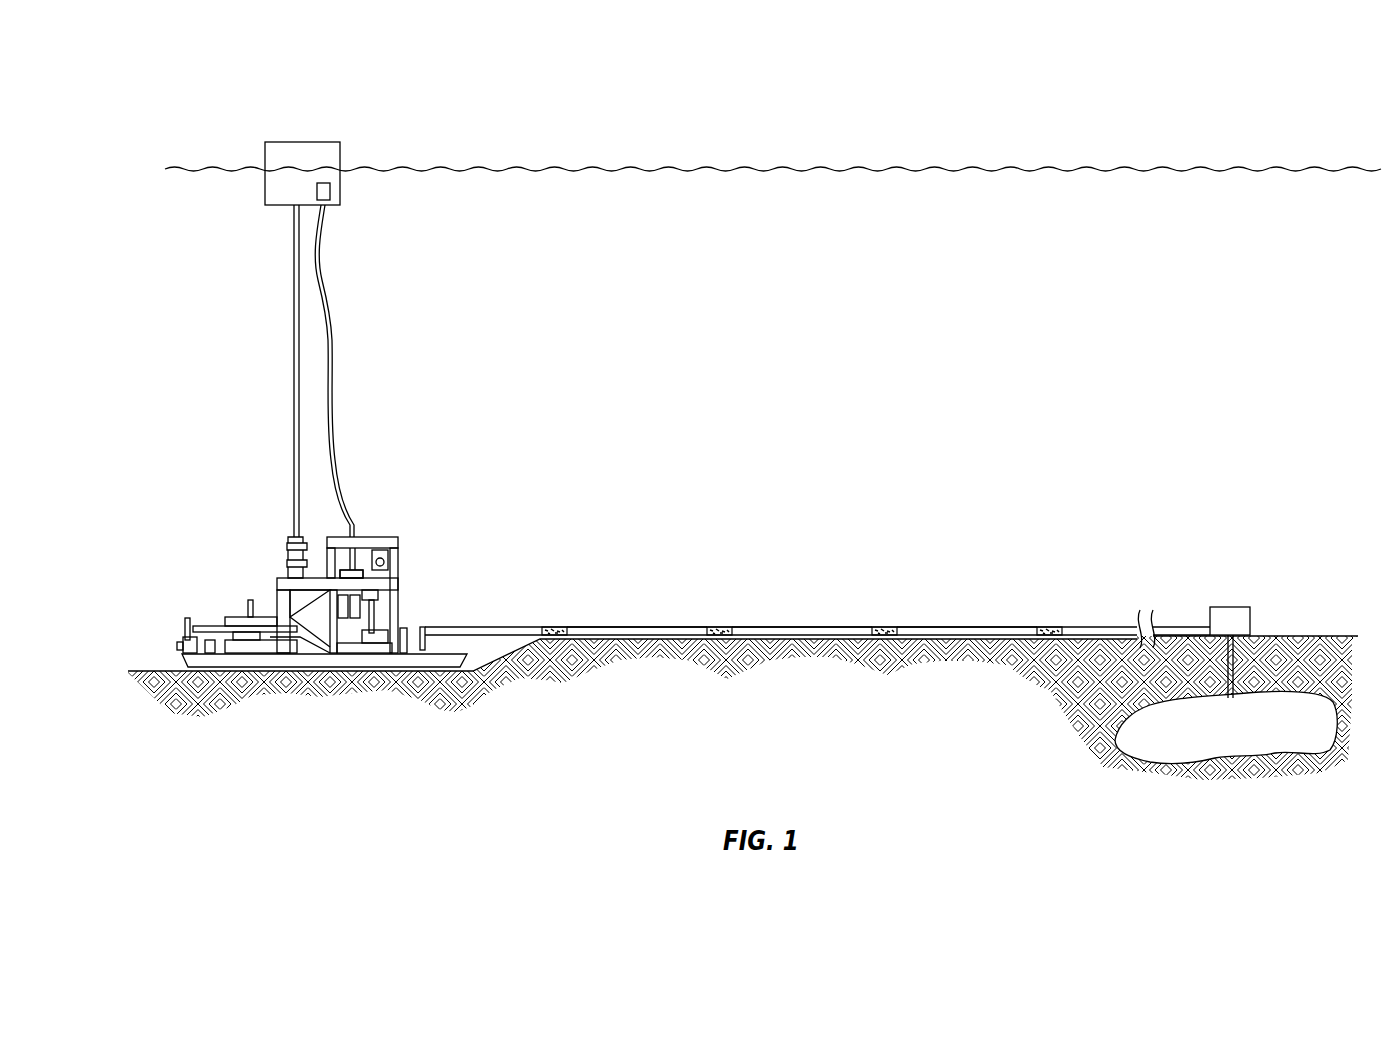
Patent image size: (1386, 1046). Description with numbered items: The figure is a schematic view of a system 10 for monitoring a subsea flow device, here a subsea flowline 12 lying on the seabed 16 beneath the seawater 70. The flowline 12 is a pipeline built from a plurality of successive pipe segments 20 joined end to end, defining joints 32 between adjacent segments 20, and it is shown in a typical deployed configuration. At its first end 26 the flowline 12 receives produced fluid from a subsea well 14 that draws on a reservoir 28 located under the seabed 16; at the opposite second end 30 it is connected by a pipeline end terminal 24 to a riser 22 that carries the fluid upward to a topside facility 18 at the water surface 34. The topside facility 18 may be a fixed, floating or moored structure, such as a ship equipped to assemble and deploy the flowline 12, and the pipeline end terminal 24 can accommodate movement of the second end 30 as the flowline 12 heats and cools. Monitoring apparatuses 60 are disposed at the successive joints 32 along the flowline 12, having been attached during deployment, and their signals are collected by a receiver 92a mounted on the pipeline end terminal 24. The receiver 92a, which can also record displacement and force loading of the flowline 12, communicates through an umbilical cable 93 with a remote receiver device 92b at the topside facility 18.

The system for monitoring a subsea flow device 10 is at (1112, 90).
The subsea flowline 12 is at (779, 578).
The subsea well 14 is at (1238, 607).
The seabed 16 is at (1285, 635).
The topside facility 18 is at (320, 142).
The pipe segment 20 is at (638, 627).
The riser 22 is at (292, 368).
The pipeline end terminal 24 is at (228, 600).
The first end 26 is at (1184, 578).
The reservoir 28 is at (1240, 739).
The second end 30 is at (440, 620).
The joint 32 is at (553, 627).
The water surface 34 is at (788, 166).
The monitoring apparatus 60 is at (557, 640).
The seawater 70 is at (810, 396).
The receiver 92a is at (358, 570).
The remote receiver device 92b is at (330, 192).
The umbilical cable 93 is at (338, 384).